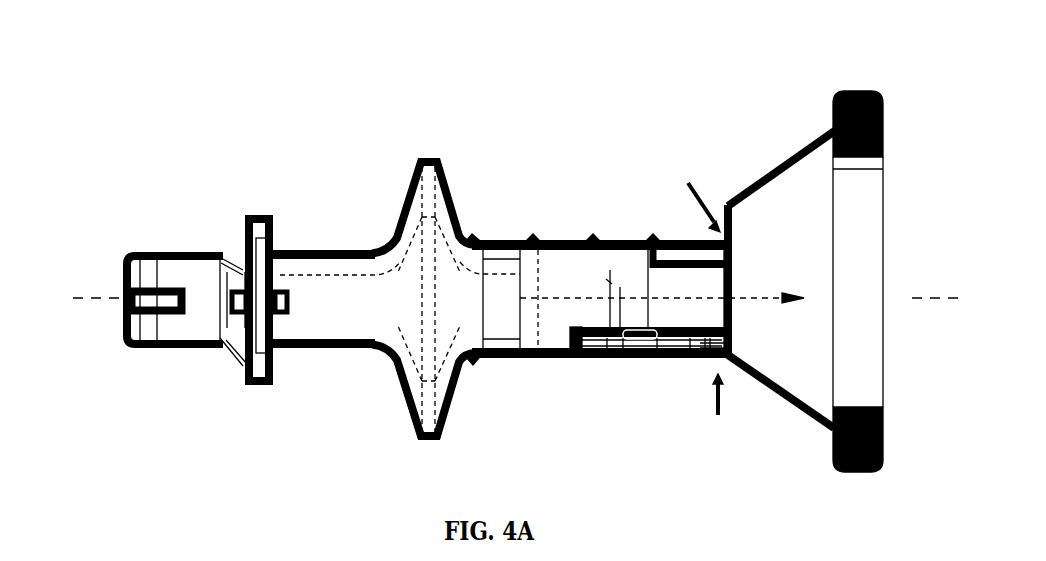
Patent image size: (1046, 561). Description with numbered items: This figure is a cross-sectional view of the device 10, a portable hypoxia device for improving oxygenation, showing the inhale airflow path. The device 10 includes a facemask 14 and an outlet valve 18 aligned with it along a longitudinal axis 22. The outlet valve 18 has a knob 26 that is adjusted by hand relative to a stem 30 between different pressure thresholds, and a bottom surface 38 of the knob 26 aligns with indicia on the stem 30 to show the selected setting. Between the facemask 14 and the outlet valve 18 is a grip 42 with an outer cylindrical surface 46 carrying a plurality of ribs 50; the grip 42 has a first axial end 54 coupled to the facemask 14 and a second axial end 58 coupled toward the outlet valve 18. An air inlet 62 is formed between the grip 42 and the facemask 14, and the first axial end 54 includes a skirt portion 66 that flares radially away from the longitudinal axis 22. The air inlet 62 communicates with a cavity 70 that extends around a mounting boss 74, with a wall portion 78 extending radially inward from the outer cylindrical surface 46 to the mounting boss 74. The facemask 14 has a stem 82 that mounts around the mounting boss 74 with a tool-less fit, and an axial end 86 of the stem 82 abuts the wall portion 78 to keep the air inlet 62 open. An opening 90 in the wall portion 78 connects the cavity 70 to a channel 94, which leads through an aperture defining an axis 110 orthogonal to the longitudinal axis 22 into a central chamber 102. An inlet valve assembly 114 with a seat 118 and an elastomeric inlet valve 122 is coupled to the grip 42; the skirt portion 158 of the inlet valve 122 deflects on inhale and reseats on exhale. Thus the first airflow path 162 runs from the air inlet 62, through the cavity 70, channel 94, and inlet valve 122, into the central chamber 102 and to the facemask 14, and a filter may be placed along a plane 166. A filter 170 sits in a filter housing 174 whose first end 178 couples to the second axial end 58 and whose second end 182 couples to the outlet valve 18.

The device 10 is at (92, 93).
The facemask 14 is at (876, 95).
The outlet valve 18 is at (251, 214).
The longitudinal axis 22 is at (928, 290).
The knob 26 is at (140, 254).
The stem 30 is at (208, 254).
The bottom surface 38 is at (185, 254).
The grip 42 is at (553, 240).
The outer cylindrical surface 46 is at (599, 242).
The ribs 50 is at (530, 238).
The first axial end 54 is at (718, 360).
The second axial end 58 is at (472, 238).
The air inlet 62 is at (718, 210).
The skirt portion 66 is at (712, 353).
The cavity 70 is at (680, 248).
The mounting boss 74 is at (731, 271).
The wall portion 78 is at (665, 245).
The stem 82 is at (733, 348).
The axial end 86 is at (653, 272).
The opening 90 is at (655, 358).
The channel 94 is at (627, 358).
The central chamber 102 is at (583, 297).
The axis 110 is at (605, 281).
The inlet valve assembly 114 is at (550, 415).
The seat 118 is at (640, 359).
The inlet valve 122 is at (586, 326).
The skirt portion 158 is at (616, 318).
The first airflow path 162 is at (648, 300).
The plane 166 is at (650, 313).
The filter 170 is at (440, 205).
The filter housing 174 is at (410, 196).
The first end 178 is at (497, 357).
The second end 182 is at (316, 351).